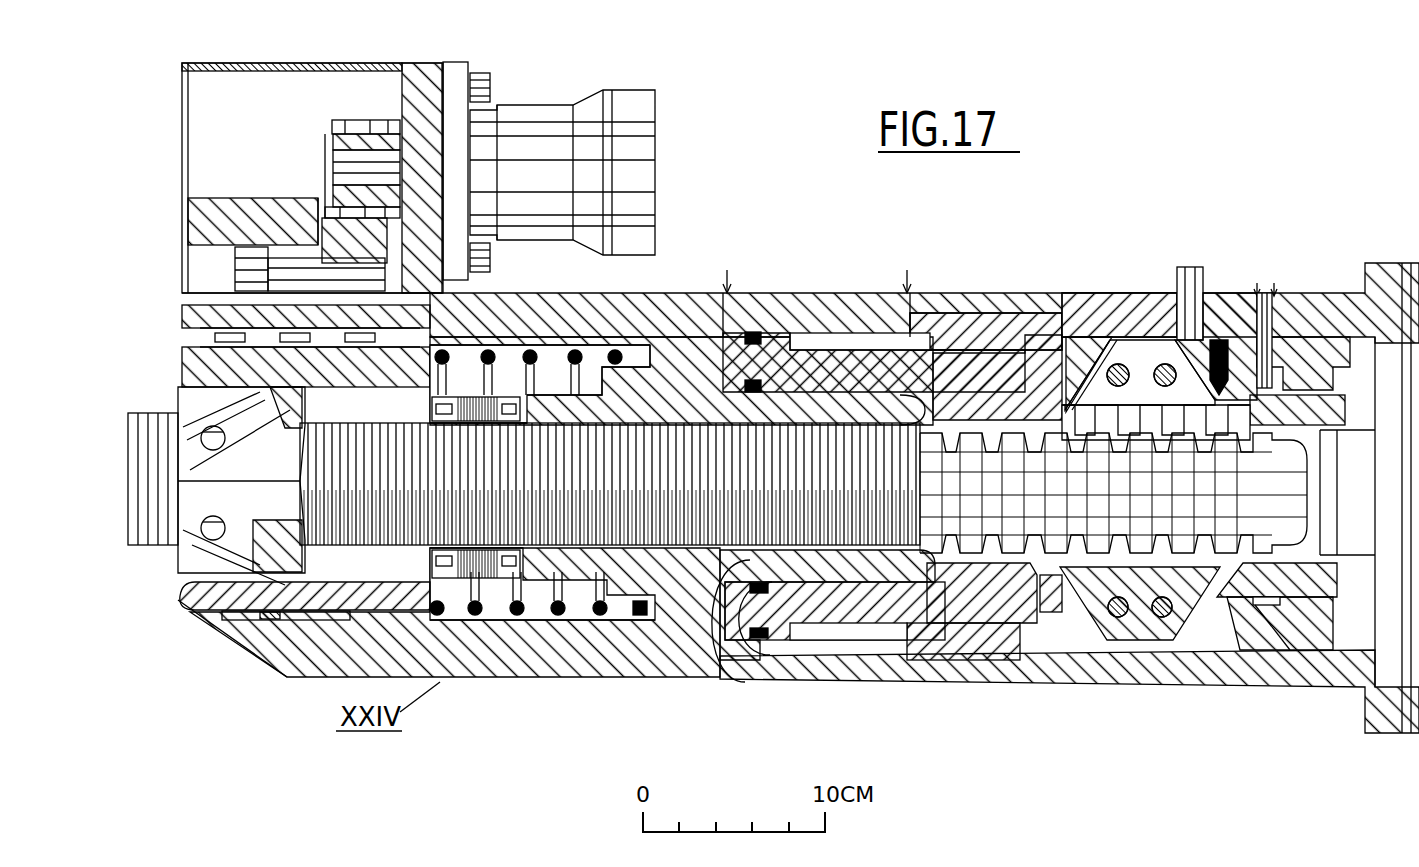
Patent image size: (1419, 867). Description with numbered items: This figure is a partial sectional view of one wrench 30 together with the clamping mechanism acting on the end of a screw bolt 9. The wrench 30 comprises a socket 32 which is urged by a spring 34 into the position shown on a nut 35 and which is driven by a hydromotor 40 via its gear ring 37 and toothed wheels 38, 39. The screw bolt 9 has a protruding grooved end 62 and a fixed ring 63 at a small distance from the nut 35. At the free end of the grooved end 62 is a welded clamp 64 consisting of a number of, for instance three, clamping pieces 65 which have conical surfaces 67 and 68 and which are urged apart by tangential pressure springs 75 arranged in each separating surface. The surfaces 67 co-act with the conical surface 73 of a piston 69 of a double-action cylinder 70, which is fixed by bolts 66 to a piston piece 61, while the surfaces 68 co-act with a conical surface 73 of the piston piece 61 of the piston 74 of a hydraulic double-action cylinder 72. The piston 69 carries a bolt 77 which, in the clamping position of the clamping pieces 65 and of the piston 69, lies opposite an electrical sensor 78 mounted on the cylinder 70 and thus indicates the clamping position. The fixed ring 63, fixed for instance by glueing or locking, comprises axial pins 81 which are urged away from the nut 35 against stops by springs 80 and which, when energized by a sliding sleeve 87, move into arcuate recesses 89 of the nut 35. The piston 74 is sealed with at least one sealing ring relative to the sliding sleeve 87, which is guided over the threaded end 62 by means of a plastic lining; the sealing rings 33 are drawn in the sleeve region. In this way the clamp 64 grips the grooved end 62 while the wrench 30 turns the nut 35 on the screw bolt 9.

The screw bolt 9 is at (720, 545).
The wrench 30 is at (1010, 293).
The socket 32 is at (242, 620).
The sealing rings 33 is at (562, 605).
The spring 34 is at (540, 310).
The nut 35 is at (178, 545).
The gear ring 37 is at (308, 388).
The toothed wheel 38 is at (312, 240).
The toothed wheel 39 is at (332, 150).
The hydromotor 40 is at (524, 120).
The piston piece 61 is at (1030, 635).
The grooved end 62 is at (1320, 478).
The fixed ring 63 is at (432, 570).
The welded clamp 64 is at (1135, 355).
The clamping pieces 65 is at (1115, 350).
The bolts 66 is at (1200, 645).
The conical surface 67 is at (1222, 310).
The conical surface 68 is at (1118, 355).
The piston 69 is at (1310, 568).
The double-action cylinder 70 is at (1268, 658).
The hydraulic double-action cylinder 72 is at (830, 345).
The conical surface 73 is at (1118, 408).
The piston 74 is at (895, 610).
The tangential pressure springs 75 is at (1098, 665).
The bolt 77 is at (1262, 295).
The electrical sensor 78 is at (1195, 300).
The springs 80 is at (470, 610).
The axial pins 81 is at (515, 608).
The sliding sleeve 87 is at (745, 570).
The arcuate recesses 89 is at (178, 400).